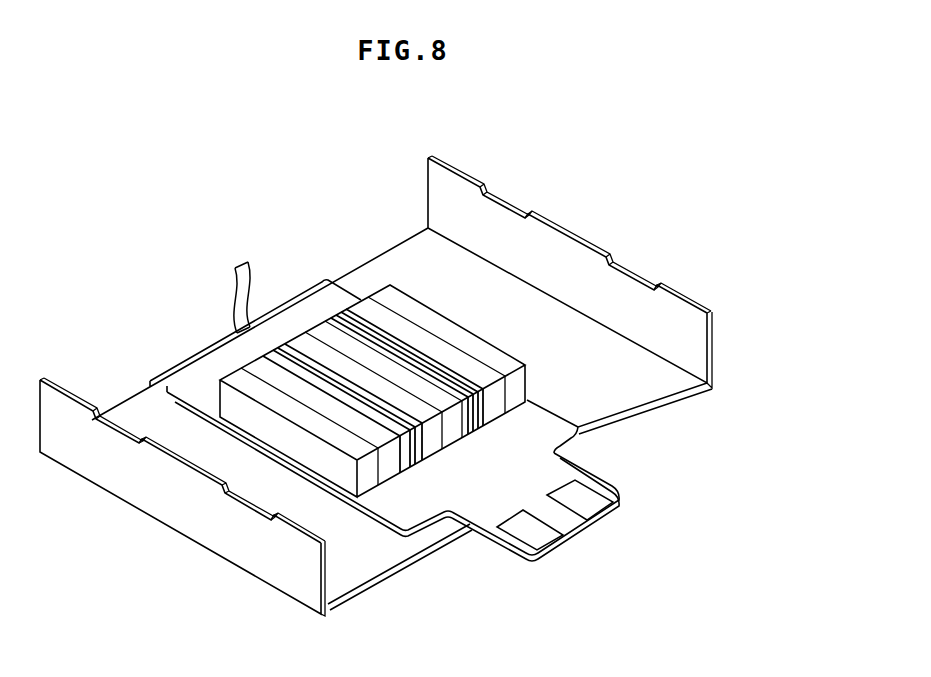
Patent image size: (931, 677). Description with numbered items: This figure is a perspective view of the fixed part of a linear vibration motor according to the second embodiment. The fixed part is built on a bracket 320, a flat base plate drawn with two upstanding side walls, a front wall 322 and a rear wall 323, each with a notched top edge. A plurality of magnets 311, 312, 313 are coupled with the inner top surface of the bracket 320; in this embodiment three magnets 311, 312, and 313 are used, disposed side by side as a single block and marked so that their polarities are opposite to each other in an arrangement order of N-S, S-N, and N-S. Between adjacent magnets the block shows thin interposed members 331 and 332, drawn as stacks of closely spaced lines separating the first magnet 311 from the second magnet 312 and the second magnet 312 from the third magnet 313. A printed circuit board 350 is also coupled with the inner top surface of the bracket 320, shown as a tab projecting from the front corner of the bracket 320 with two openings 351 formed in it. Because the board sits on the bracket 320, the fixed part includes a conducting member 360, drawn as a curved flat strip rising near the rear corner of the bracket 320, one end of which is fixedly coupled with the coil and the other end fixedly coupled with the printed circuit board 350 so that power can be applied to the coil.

The magnet 311 is at (233, 377).
The magnet 312 is at (300, 348).
The magnet 313 is at (383, 297).
The bracket 320 is at (716, 303).
The side wall 322 is at (250, 568).
The rear wall 323 is at (682, 323).
The first spacer yoke 331 is at (282, 343).
The second spacer yoke 332 is at (345, 293).
The printed circuit board 350 is at (604, 477).
The fastening hole 351 is at (600, 503).
The conducting member 360 is at (235, 273).